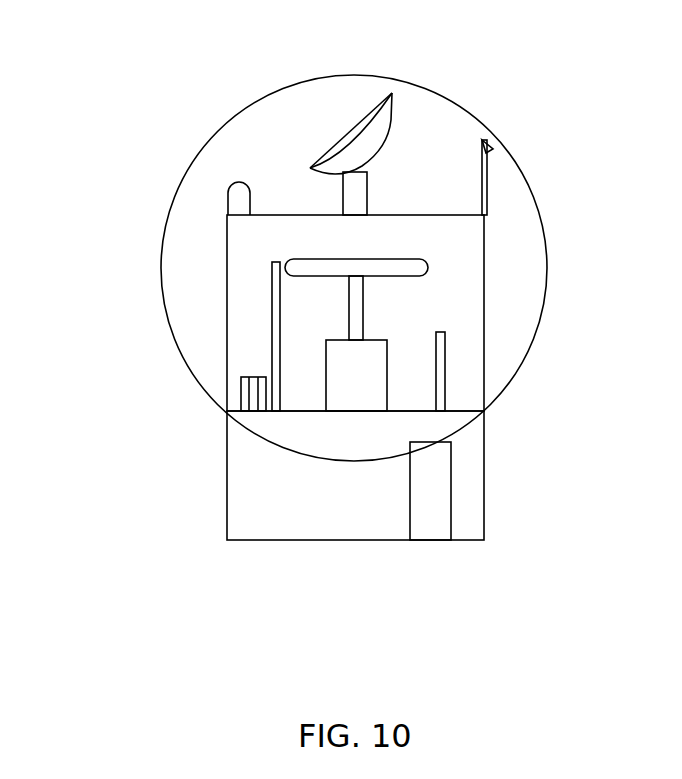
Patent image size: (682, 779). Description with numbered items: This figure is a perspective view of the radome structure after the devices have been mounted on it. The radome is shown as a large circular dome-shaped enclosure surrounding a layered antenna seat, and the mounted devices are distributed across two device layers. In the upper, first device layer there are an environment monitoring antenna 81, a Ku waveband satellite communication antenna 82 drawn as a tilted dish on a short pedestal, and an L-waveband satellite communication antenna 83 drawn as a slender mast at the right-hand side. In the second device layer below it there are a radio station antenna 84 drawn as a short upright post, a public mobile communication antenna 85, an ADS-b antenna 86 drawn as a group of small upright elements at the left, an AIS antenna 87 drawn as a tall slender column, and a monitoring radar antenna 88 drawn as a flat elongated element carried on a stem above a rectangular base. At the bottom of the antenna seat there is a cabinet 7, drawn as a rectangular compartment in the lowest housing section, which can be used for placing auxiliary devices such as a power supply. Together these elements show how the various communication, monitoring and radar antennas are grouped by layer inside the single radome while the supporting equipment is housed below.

The cabinet 7 is at (520, 523).
The environment monitoring antenna 81 is at (422, 107).
The Ku waveband satellite communication antenna 82 is at (204, 129).
The L-waveband satellite communication antenna 83 is at (554, 150).
The radio station antenna 84 is at (537, 285).
The public mobile communication antenna 85 is at (250, 377).
The ADS-b antenna 86 is at (141, 341).
The AIS antenna 87 is at (148, 292).
The monitoring radar antenna 88 is at (222, 263).